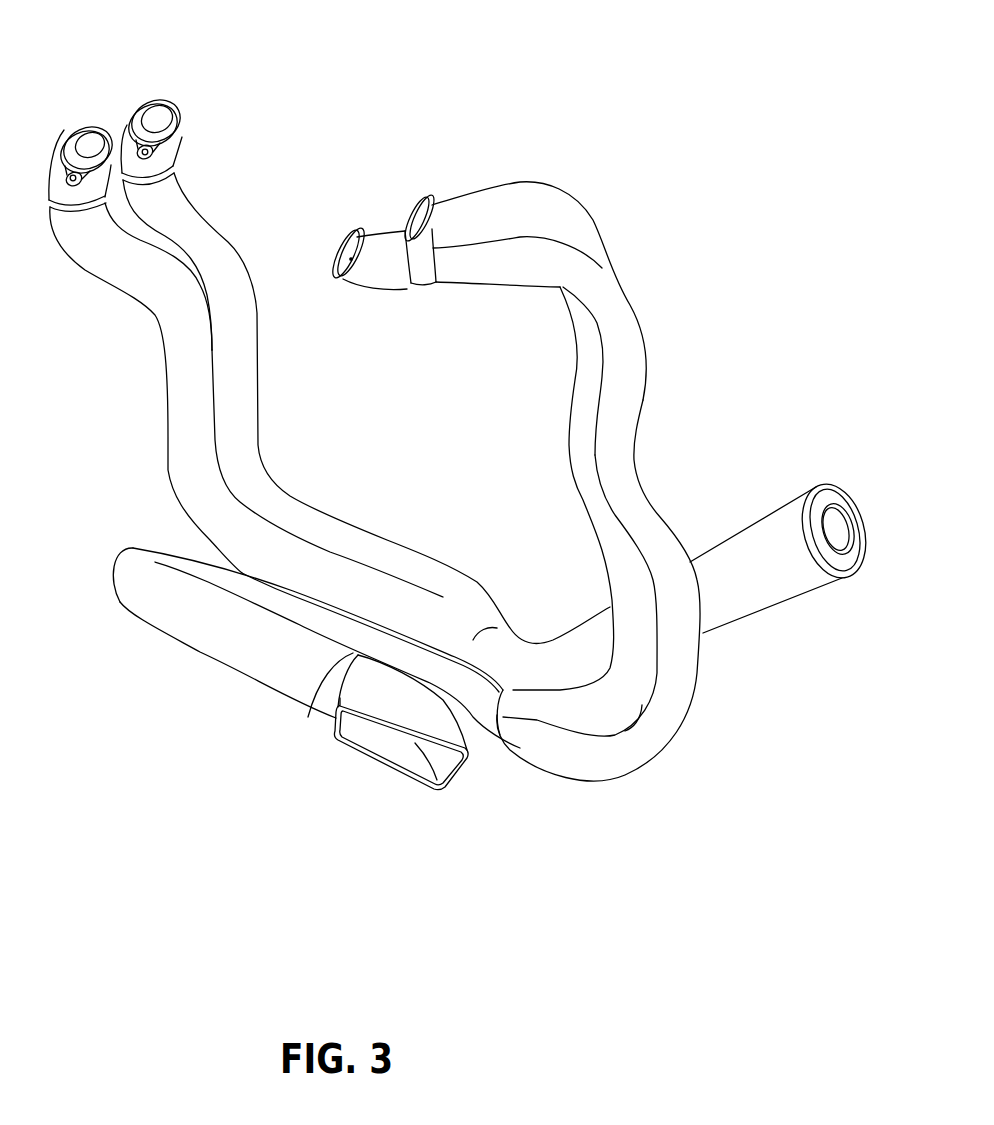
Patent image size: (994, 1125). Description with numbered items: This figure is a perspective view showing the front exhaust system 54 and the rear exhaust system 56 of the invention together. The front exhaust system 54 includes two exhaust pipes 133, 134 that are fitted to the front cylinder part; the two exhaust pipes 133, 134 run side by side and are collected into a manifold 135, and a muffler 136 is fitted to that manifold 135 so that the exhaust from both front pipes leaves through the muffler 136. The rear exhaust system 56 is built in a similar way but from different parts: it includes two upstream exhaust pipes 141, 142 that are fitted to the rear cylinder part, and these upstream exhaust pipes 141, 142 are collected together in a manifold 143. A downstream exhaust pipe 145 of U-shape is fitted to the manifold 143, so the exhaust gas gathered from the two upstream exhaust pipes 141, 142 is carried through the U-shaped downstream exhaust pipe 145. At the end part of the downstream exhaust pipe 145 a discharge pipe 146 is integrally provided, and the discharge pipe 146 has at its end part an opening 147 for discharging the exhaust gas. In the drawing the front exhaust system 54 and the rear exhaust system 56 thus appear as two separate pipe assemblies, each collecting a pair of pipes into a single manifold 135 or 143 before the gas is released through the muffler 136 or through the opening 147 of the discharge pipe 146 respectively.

The front exhaust system 54 is at (64, 129).
The rear exhaust system 56 is at (492, 401).
The exhaust pipe 133 is at (145, 287).
The exhaust pipe 134 is at (200, 227).
The manifold 135 is at (473, 613).
The muffler 136 is at (752, 540).
The upstream exhaust pipe 141 is at (483, 210).
The upstream exhaust pipe 142 is at (517, 270).
The manifold 143 is at (500, 750).
The downstream exhaust pipe 145 is at (200, 640).
The discharge pipe 146 is at (308, 717).
The opening 147 is at (388, 767).